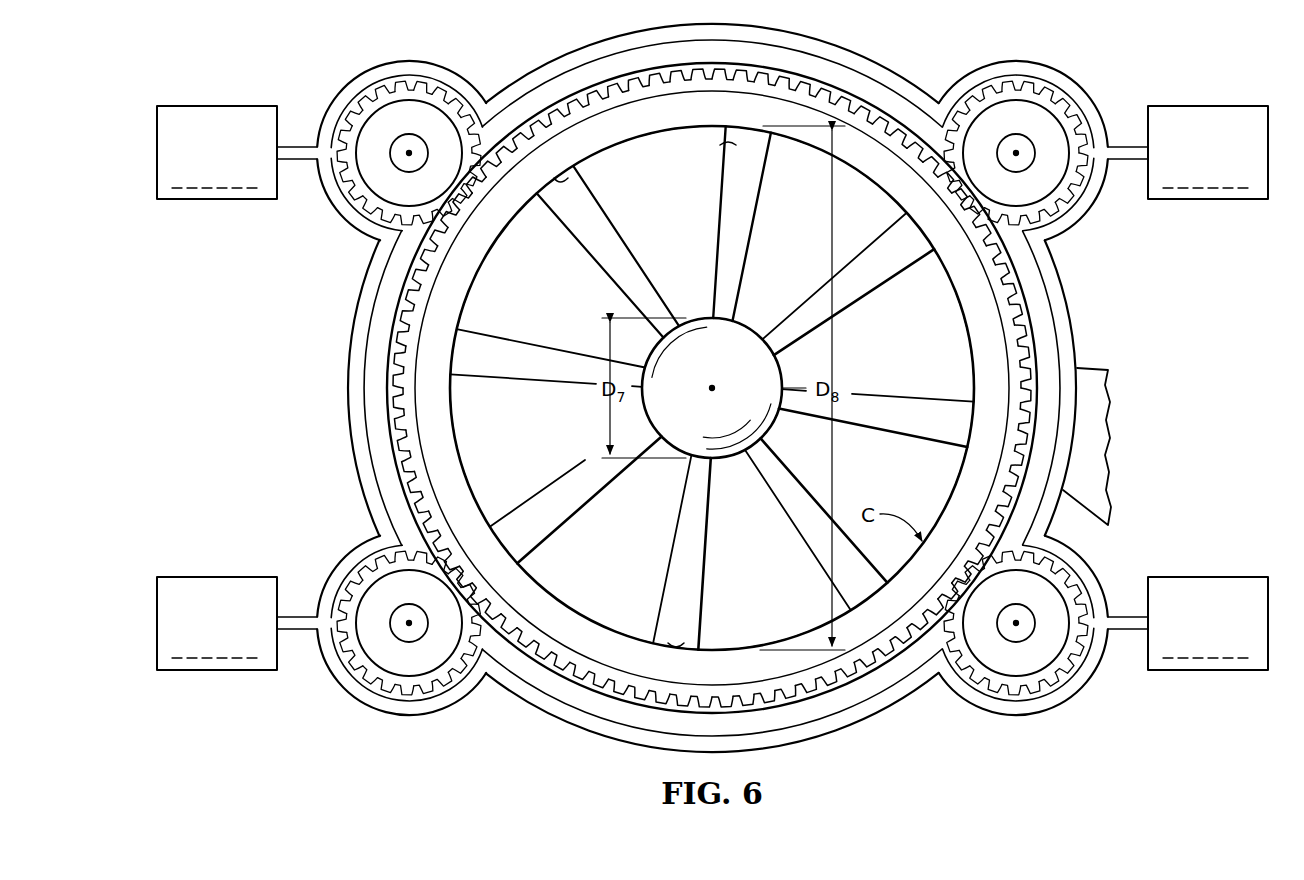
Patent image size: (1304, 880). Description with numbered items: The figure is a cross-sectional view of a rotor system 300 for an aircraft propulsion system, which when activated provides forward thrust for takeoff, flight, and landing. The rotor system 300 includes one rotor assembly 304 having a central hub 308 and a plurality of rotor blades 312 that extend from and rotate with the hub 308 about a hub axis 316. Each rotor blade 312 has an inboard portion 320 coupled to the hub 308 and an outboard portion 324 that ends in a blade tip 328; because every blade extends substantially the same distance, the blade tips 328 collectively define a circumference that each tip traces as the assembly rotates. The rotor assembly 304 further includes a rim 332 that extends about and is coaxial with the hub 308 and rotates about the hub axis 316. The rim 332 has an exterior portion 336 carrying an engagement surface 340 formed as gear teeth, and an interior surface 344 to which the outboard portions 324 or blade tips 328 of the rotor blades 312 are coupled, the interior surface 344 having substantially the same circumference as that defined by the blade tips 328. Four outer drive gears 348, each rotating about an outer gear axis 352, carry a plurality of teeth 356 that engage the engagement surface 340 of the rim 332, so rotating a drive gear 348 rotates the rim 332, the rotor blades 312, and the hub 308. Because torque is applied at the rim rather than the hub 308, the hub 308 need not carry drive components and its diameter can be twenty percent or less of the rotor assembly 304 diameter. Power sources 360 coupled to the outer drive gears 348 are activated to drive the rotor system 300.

The rotor system 300 is at (897, 757).
The rotor assembly 304 is at (835, 85).
The hub 308 is at (696, 414).
The plurality of rotor blades 312 is at (548, 350).
The hub axis 316 is at (714, 386).
The inboard portion 320 is at (679, 312).
The outboard portion 324 is at (548, 222).
The blade tip 328 is at (568, 180).
The rim 332 is at (388, 430).
The exterior portion 336 is at (462, 290).
The engagement surface 340 is at (390, 392).
The interior surface 344 is at (957, 485).
The outer drive gear 348 is at (385, 112).
The outer gear axis 352 is at (411, 151).
The plurality of teeth 356 is at (405, 62).
The power source 360 is at (215, 106).